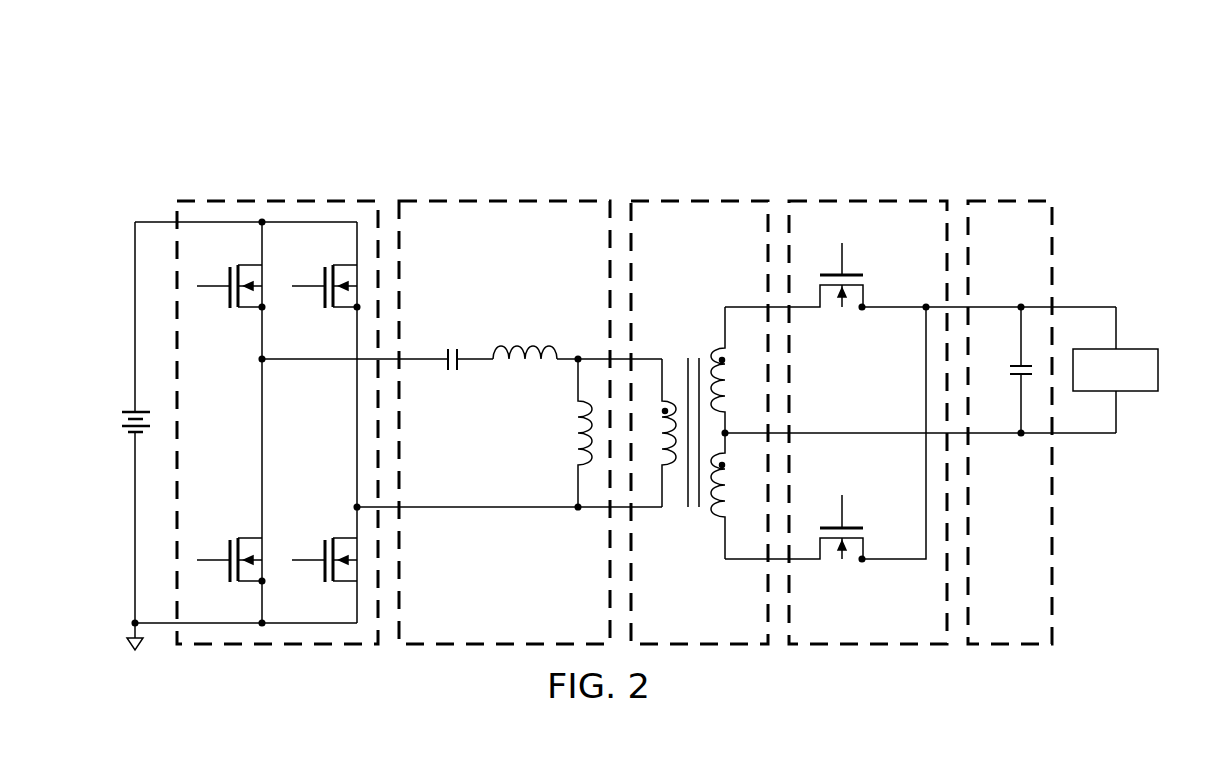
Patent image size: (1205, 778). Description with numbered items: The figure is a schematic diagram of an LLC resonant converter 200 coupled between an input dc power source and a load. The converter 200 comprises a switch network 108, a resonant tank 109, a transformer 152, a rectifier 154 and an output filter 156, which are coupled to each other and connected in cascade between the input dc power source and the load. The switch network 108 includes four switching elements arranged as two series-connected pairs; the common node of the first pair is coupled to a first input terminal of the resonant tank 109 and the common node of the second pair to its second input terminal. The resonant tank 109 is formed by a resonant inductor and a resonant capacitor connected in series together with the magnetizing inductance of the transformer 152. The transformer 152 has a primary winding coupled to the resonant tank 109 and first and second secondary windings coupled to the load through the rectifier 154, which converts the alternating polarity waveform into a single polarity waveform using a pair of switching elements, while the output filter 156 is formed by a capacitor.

The LLC resonant converter 200 is at (334, 104).
The switch network 108 is at (240, 199).
The resonant tank 109 is at (452, 199).
The transformer 152 is at (713, 199).
The rectifier 154 is at (890, 199).
The output filter 156 is at (1022, 199).